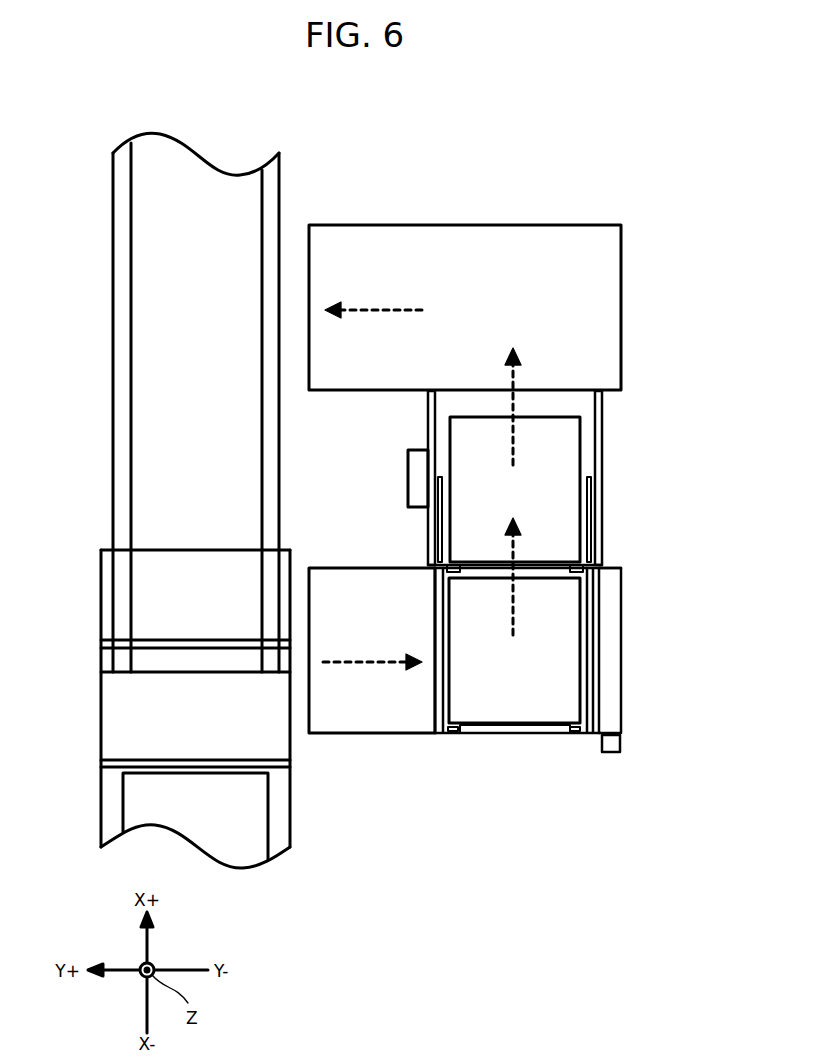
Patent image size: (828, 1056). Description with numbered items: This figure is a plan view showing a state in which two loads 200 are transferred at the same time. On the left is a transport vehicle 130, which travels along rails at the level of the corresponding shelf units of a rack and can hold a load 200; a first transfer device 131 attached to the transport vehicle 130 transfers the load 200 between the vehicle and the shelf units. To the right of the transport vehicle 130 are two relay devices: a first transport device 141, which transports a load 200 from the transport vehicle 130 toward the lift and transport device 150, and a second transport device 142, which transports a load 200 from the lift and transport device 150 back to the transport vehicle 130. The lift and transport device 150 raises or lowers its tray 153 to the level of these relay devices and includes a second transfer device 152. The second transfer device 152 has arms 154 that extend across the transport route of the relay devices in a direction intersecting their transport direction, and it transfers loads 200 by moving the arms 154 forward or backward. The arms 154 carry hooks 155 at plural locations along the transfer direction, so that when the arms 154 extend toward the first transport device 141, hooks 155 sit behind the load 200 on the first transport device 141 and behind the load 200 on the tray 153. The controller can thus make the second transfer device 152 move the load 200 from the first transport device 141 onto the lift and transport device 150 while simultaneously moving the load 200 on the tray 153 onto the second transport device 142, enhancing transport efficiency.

The transport vehicle 130 is at (183, 520).
The first transfer device 131 is at (213, 640).
The first transport device 141 is at (335, 588).
The second transport device 142 is at (532, 245).
The lift and transport device 150 is at (513, 645).
The second transfer device 152 is at (428, 417).
The tray 153 is at (585, 412).
The arm 154 is at (440, 685).
The hook 155 is at (458, 570).
The load 200 is at (527, 499).